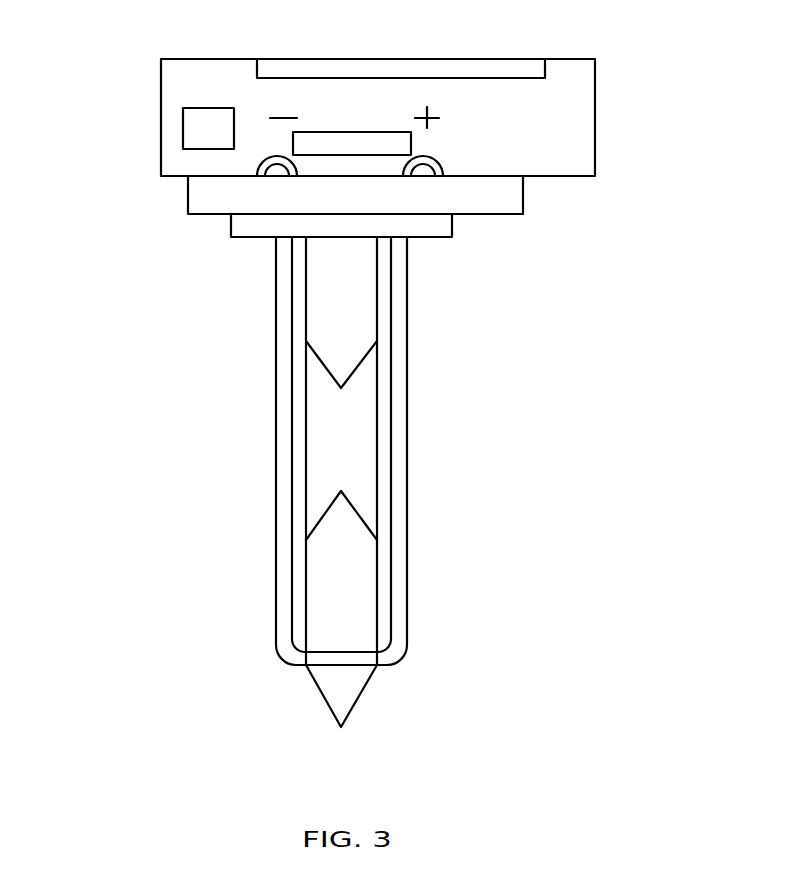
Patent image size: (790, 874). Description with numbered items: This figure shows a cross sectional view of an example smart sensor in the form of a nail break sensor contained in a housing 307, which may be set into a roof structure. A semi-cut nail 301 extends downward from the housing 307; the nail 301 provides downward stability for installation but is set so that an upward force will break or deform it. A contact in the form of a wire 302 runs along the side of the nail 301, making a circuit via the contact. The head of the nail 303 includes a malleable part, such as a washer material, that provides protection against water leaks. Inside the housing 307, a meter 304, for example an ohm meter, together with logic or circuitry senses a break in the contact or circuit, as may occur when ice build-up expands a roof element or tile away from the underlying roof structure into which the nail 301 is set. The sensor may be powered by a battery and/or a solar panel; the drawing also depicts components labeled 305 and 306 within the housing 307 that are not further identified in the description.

The semi-cut nail 301 is at (361, 456).
The wire 302 is at (407, 376).
The head of the nail 303 is at (437, 228).
The meter 304 is at (411, 140).
The switch 305 is at (190, 137).
The display 306 is at (400, 68).
The housing 307 is at (168, 82).